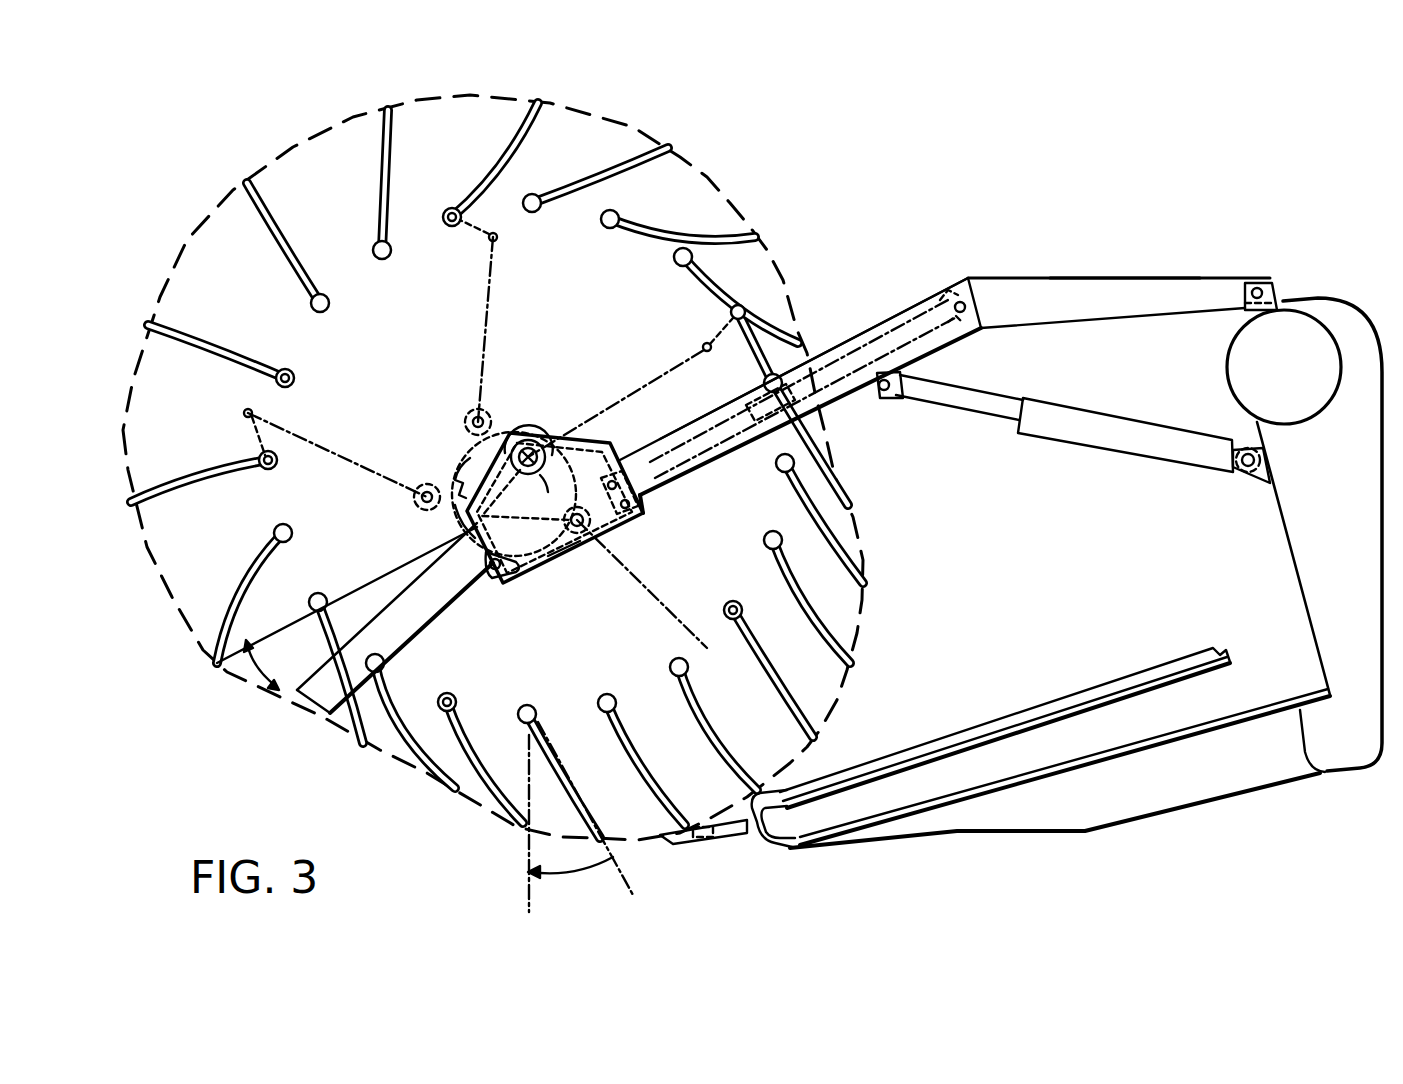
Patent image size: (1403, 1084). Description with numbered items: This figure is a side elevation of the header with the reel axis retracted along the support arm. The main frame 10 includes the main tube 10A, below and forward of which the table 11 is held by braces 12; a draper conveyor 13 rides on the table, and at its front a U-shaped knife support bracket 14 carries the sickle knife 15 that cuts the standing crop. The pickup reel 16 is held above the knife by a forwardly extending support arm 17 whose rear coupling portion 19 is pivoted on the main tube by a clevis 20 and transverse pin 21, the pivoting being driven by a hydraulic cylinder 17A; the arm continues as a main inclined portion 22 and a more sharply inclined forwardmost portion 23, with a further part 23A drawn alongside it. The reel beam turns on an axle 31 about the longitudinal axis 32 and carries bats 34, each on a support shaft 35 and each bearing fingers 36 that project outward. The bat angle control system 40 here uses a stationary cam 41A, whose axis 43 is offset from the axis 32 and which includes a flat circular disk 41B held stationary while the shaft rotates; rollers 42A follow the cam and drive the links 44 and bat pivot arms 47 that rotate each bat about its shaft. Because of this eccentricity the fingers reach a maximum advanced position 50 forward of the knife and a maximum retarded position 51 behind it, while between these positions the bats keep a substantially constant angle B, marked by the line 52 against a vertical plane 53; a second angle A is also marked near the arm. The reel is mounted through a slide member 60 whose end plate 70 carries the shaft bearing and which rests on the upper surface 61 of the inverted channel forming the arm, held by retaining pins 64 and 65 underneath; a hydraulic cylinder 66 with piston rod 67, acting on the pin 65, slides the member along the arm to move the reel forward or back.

The main frame 10 is at (1306, 272).
The main tube 10A is at (1243, 363).
The table 11 is at (1130, 742).
The braces 12 is at (1308, 540).
The draper conveyor 13 is at (1035, 697).
The knife support bracket 14 is at (765, 790).
The sickle knife 15 is at (724, 850).
The pickup reel 16 is at (805, 185).
The support arm 17 is at (1033, 266).
The hydraulic cylinders 17A is at (1128, 445).
The rear coupling portion 19 is at (1118, 278).
The clevises 20 is at (1248, 306).
The transverse pin 21 is at (1258, 282).
The main portion 22 is at (902, 312).
The forwardmost portion 23 is at (405, 635).
The frame arm link 23A is at (427, 545).
The axle 31 is at (519, 440).
The main longitudinal axis 32 is at (531, 440).
The bats 34 is at (265, 372).
The support shaft 35 is at (297, 378).
The fingers 36 is at (183, 325).
The bat angle control system 40 is at (438, 449).
The cam 41A is at (443, 470).
The flat disk 41B is at (430, 530).
The cam roller 42A is at (470, 412).
The cam axis 43 is at (547, 523).
The links 44 is at (508, 310).
The bat pivot arm 47 is at (470, 240).
The maximum advanced position 50 is at (331, 586).
The maximum retarded position 51 is at (700, 322).
The bat angle line 52 is at (640, 878).
The vertical plane 53 is at (528, 857).
The slide member 60 is at (604, 426).
The upper support surface 61 is at (680, 418).
The retaining pin 64 is at (520, 578).
The retaining pin 65 is at (640, 512).
The hydraulic cylinder 66 is at (878, 325).
The piston rod 67 is at (703, 450).
The end plate 70 is at (565, 558).
The angle A is at (235, 668).
The bat angle B is at (573, 870).